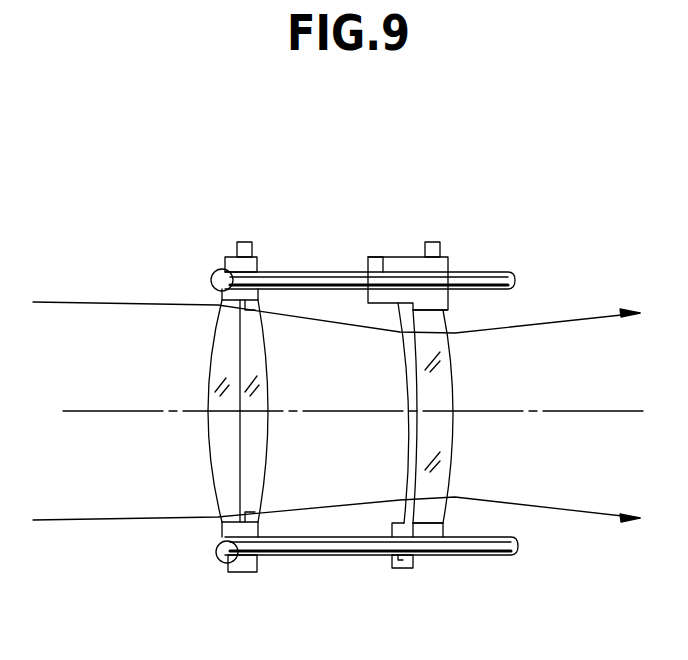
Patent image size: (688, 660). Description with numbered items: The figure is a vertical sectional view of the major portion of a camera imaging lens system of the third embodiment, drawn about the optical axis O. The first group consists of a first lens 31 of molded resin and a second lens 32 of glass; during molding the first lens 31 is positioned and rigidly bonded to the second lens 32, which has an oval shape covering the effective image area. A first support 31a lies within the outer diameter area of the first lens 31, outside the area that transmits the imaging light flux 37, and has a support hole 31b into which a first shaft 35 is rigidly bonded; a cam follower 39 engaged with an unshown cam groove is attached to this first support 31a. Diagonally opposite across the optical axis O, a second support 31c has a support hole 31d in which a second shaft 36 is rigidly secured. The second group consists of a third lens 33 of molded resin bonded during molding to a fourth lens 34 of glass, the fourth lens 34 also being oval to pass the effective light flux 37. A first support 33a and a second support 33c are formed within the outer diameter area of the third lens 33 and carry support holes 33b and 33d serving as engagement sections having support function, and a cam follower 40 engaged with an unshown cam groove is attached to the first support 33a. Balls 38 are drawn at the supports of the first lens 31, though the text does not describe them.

The optical axis O is at (622, 408).
The first lens 31 is at (222, 490).
The first support 31a is at (236, 256).
The support hole 31b is at (213, 286).
The second support 31c is at (245, 572).
The support hole 31d is at (218, 563).
The second lens 32 is at (253, 488).
The third lens 33 is at (405, 468).
The first support 33a is at (403, 262).
The support hole 33b is at (374, 258).
The second support 33c is at (397, 568).
The support hole 33d is at (412, 547).
The fourth lens 34 is at (443, 473).
The first shaft 35 is at (510, 272).
The second shaft 36 is at (505, 548).
The imaging light flux 37 is at (67, 302).
The ball 38 is at (214, 276).
The cam follower 39 is at (244, 242).
The cam follower 40 is at (435, 250).